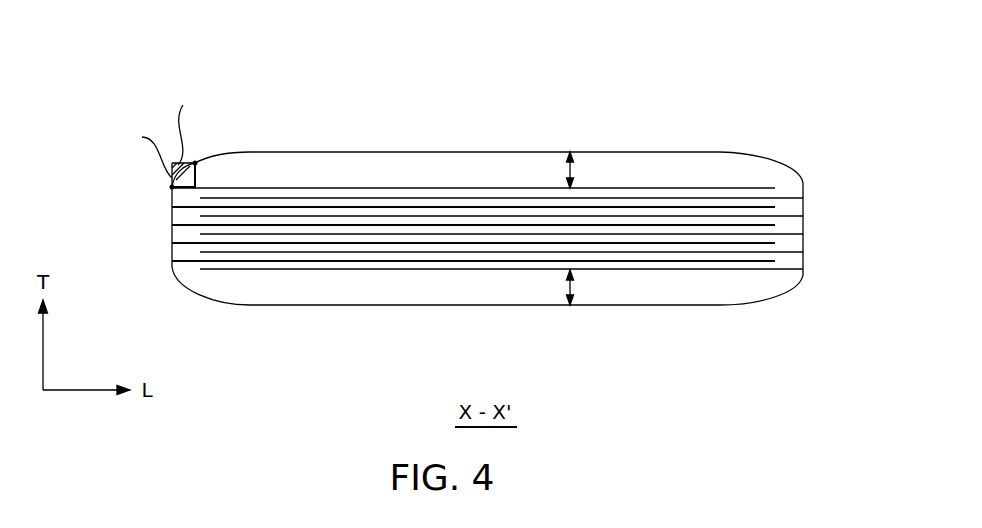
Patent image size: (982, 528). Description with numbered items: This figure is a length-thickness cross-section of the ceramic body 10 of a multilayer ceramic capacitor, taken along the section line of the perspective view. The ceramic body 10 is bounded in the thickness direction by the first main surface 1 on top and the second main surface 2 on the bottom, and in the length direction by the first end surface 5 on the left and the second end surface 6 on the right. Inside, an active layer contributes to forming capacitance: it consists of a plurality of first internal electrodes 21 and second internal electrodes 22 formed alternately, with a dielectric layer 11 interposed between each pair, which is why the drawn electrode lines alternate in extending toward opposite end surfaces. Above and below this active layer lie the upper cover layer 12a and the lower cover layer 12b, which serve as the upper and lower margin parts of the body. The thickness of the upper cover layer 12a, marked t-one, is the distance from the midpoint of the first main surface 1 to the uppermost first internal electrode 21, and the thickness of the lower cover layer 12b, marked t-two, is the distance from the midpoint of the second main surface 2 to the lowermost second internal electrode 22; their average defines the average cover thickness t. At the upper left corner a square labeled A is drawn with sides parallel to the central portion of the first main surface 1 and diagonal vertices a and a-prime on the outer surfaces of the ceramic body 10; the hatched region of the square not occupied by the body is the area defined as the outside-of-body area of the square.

The ceramic body 10 is at (472, 33).
The first main surface 1 is at (533, 146).
The second main surface 2 is at (533, 311).
The first end surface 5 is at (168, 236).
The second end surface 6 is at (807, 236).
The dielectric layer 11 is at (413, 193).
The first internal electrode 21 is at (352, 188).
The second internal electrode 22 is at (462, 198).
The upper cover layer 12a is at (627, 170).
The lower cover layer 12b is at (627, 288).